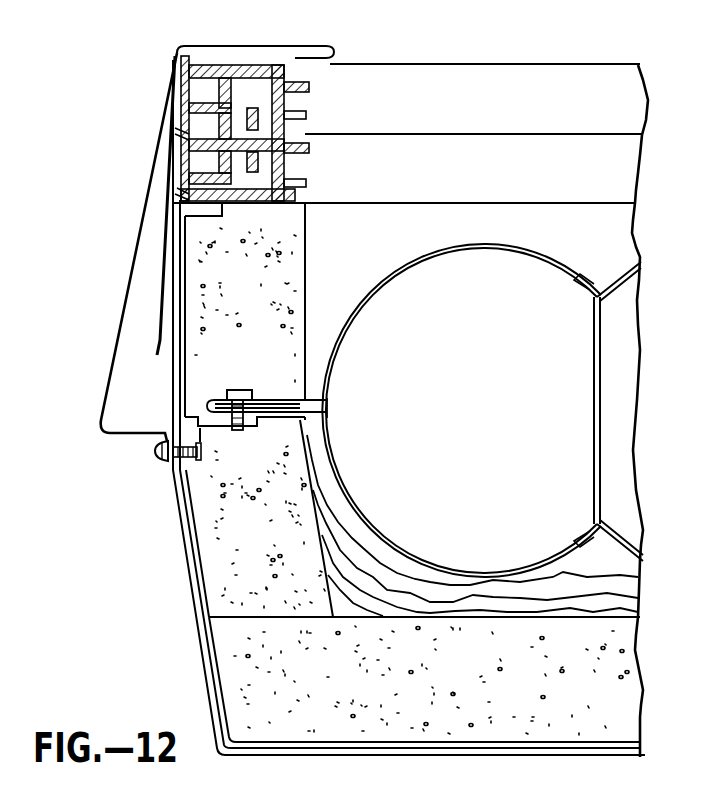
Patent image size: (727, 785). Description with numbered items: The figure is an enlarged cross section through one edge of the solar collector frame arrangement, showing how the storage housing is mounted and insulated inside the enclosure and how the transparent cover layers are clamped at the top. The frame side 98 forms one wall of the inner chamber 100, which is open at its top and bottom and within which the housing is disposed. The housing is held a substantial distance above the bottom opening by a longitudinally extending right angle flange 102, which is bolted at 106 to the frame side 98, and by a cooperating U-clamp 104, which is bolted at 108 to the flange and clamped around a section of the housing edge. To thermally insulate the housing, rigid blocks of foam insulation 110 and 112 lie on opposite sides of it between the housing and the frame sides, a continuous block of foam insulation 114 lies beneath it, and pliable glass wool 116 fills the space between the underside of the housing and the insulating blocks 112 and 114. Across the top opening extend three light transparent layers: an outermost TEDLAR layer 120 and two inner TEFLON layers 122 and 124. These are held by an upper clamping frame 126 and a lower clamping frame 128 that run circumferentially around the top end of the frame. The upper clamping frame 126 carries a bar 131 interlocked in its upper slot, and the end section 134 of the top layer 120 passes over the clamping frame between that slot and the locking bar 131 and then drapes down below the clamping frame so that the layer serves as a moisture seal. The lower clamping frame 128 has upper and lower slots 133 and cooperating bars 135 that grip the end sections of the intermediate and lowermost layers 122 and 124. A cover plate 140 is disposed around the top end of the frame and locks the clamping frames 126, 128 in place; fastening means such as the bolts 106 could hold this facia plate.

The frame side 98 is at (207, 622).
The inner chamber 100 is at (368, 245).
The right angle flange 102 is at (224, 427).
The U-clamp 104 is at (284, 398).
The bolt 106 is at (158, 461).
The bolt 108 is at (238, 390).
The rigid block of foam insulation 110 is at (259, 294).
The rigid block of foam insulation 112 is at (270, 537).
The continuous block of foam insulation 114 is at (483, 676).
The glass wool 116 is at (357, 555).
The top TEDLAR layer 120 is at (538, 64).
The intermediate TEFLON layer 122 is at (542, 134).
The lowermost TEFLON layer 124 is at (520, 203).
The upper clamping frame 126 is at (302, 86).
The lower clamping frame 128 is at (302, 148).
The bar 131 is at (233, 36).
The slots 133 is at (232, 128).
The circumferential end section 134 is at (182, 183).
The bars 135 is at (181, 132).
The cover plate 140 is at (137, 246).